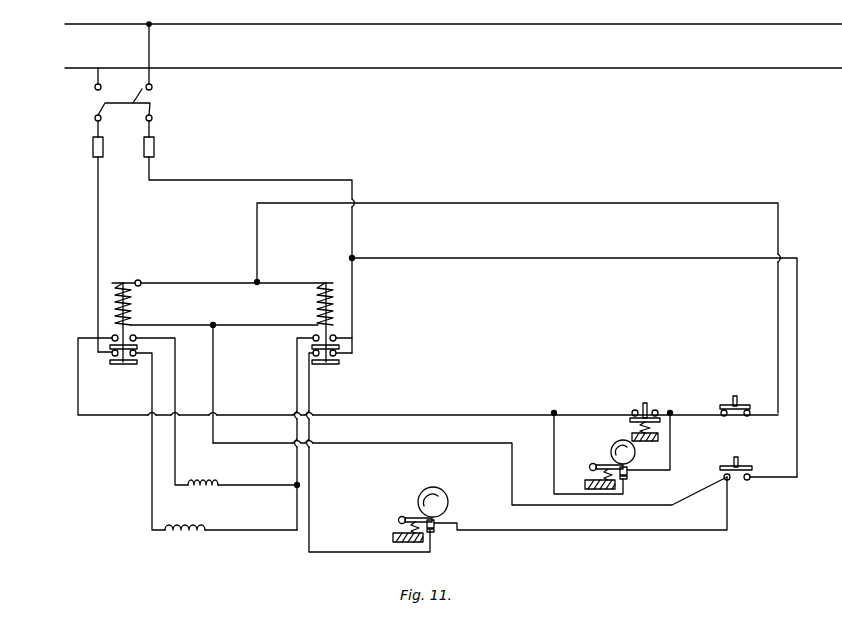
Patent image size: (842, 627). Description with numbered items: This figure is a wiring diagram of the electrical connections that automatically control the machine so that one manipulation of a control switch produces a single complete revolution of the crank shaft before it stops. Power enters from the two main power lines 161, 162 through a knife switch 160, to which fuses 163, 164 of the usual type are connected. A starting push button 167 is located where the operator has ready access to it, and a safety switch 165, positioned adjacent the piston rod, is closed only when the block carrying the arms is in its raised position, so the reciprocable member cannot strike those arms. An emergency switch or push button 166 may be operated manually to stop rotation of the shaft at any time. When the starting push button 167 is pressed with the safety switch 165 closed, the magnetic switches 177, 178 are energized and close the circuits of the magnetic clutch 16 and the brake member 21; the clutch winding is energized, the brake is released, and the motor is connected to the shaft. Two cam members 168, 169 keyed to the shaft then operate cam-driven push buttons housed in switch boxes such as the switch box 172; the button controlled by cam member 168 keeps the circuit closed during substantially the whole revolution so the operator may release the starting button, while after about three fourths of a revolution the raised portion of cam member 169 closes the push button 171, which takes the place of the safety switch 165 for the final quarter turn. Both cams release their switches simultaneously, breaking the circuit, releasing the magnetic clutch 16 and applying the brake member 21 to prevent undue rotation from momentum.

The magnetic clutch 16 is at (206, 487).
The brake member 21 is at (178, 533).
The knife switch 160 is at (104, 108).
The main power line 161 is at (438, 23).
The main power line 162 is at (450, 70).
The fuse 163 is at (93, 148).
The fuse 164 is at (154, 148).
The safety switch 165 is at (646, 401).
The emergency switch 166 is at (730, 400).
The starting push button 167 is at (741, 461).
The cam member 168 is at (444, 492).
The cam member 169 is at (612, 446).
The push button 171 is at (605, 466).
The switch box 172 is at (411, 518).
The magnetic switch 177 is at (123, 364).
The magnetic switch 178 is at (326, 364).